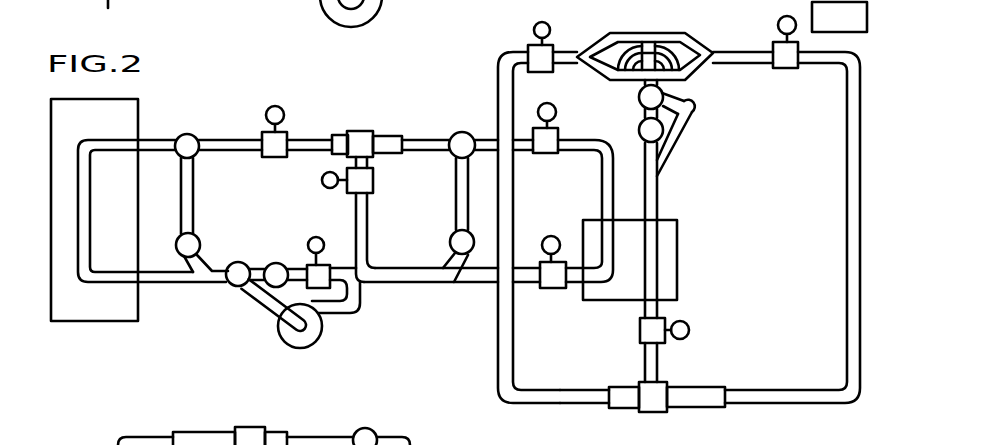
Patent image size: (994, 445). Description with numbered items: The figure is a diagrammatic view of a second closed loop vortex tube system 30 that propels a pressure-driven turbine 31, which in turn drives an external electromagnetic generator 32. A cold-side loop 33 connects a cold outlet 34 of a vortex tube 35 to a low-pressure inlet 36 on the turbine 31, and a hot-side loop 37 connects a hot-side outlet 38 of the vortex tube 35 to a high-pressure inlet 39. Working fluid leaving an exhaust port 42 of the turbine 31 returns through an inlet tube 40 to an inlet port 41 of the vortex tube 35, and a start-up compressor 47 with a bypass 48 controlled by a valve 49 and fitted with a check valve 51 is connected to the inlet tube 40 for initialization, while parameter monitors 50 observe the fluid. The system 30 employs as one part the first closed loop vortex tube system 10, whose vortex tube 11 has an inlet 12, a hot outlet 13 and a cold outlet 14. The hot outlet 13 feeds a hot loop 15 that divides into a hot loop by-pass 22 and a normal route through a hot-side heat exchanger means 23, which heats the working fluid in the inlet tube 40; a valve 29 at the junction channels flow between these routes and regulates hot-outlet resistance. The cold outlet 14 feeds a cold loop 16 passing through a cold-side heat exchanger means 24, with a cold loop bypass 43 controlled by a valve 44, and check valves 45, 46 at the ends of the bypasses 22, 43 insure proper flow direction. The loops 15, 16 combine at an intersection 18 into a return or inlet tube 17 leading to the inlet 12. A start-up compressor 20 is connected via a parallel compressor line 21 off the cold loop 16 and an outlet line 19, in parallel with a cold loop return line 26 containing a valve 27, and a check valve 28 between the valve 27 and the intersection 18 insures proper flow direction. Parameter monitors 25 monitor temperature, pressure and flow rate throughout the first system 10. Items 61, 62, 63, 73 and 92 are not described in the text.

The first closed loop vortex tube system 10 is at (222, 118).
The vortex tube 11 is at (358, 124).
The inlet 12 is at (367, 163).
The hot outlet 13 is at (388, 135).
The cold outlet 14 is at (340, 134).
The hot loop 15 is at (490, 152).
The cold loop 16 is at (148, 142).
The return or inlet tube 17 is at (369, 220).
The intersection 18 is at (381, 250).
The outlet line 19 is at (351, 296).
The start-up compressor 20 is at (279, 334).
The parallel compressor line 21 is at (259, 302).
The hot loop by-pass 22 is at (456, 212).
The hot-side heat exchanger means 23 is at (665, 238).
The cold-side heat exchanger means 24 is at (101, 127).
The parameter monitors 25 is at (281, 106).
The cold loop return line 26 is at (322, 265).
The valve 27 is at (228, 283).
The check valve 28 is at (280, 262).
The valve 29 is at (470, 132).
The second closed loop vortex tube system 30 is at (469, 301).
The pressure-driven turbine 31 is at (654, 33).
The external electromagnetic generator 32 is at (853, 30).
The cold-side loop 33 is at (573, 390).
The cold outlet 34 is at (625, 387).
The vortex tube 35 is at (634, 418).
The low-pressure inlet 36 is at (584, 48).
The hot-side loop 37 is at (852, 362).
The hot-side outlet 38 is at (688, 407).
The high-pressure inlet 39 is at (723, 62).
The inlet tube 40 is at (656, 312).
The inlet port 41 is at (660, 386).
The exhaust port 42 is at (638, 84).
The cold loop bypass 43 is at (195, 205).
The valve 44 is at (196, 156).
The check valve 45 is at (200, 238).
The check valve 46 is at (451, 243).
The start-up compressor 47 is at (699, 113).
The bypass 48 is at (638, 125).
The valve 49 is at (670, 88).
The parameter monitors 50 is at (535, 27).
The check valve 51 is at (684, 135).
The coupling 61 is at (252, 427).
The filter 62 is at (218, 432).
The coupling 63 is at (288, 432).
The valve 73 is at (341, 437).
The conduit 92 is at (374, 432).